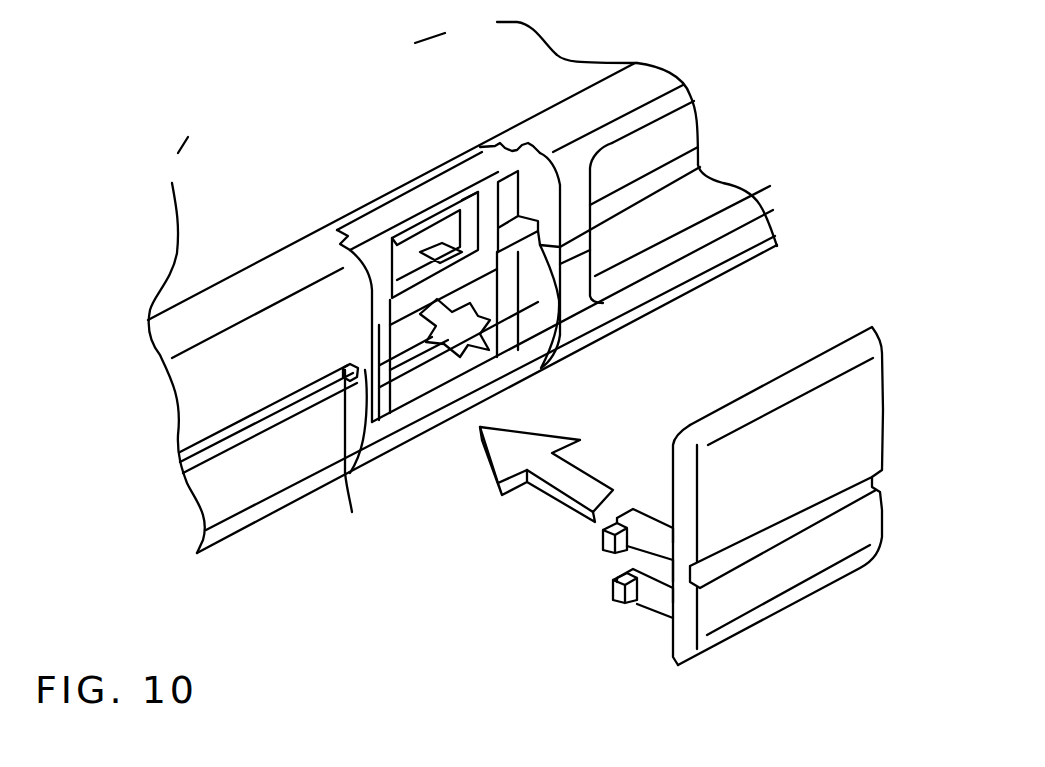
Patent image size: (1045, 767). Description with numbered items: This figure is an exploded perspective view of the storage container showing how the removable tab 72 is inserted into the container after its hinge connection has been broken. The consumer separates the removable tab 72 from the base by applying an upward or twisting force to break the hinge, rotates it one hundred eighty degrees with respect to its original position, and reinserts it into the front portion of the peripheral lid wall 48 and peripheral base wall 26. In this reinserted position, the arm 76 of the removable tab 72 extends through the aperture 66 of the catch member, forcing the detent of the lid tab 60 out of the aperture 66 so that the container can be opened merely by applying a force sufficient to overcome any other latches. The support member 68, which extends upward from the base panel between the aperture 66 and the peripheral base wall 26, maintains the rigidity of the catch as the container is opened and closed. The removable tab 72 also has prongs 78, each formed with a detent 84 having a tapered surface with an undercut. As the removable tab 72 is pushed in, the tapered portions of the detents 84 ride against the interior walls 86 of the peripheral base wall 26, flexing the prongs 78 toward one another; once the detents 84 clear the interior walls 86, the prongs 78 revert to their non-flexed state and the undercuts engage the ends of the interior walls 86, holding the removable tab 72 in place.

The peripheral base wall 26 is at (745, 198).
The peripheral lid wall 48 is at (650, 88).
The tab 60 is at (470, 290).
The aperture 66 is at (423, 362).
The support member 68 is at (473, 327).
The removable tab 72 is at (870, 410).
The arm 76 is at (615, 551).
The prong 78 is at (640, 522).
The detent 84 is at (603, 533).
The interior walls 86 is at (553, 343).